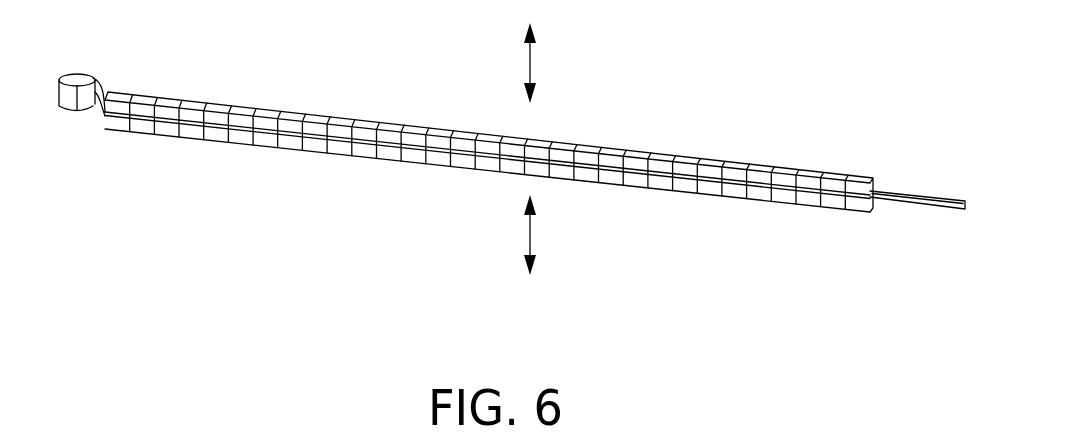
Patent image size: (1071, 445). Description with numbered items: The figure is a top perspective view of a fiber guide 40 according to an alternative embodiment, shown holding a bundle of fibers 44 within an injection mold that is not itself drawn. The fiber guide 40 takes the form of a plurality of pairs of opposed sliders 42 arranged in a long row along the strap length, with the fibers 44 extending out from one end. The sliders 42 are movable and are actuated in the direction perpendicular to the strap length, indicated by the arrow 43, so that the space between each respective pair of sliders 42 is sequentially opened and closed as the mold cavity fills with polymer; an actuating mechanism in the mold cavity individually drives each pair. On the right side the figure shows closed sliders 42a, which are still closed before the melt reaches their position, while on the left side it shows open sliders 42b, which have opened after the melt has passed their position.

The fiber guide 40 is at (512, 150).
The sliders 42 is at (288, 108).
The closed sliders 42a is at (688, 192).
The open sliders 42b is at (308, 150).
The arrow 43 is at (531, 62).
The fibers 44 is at (926, 205).